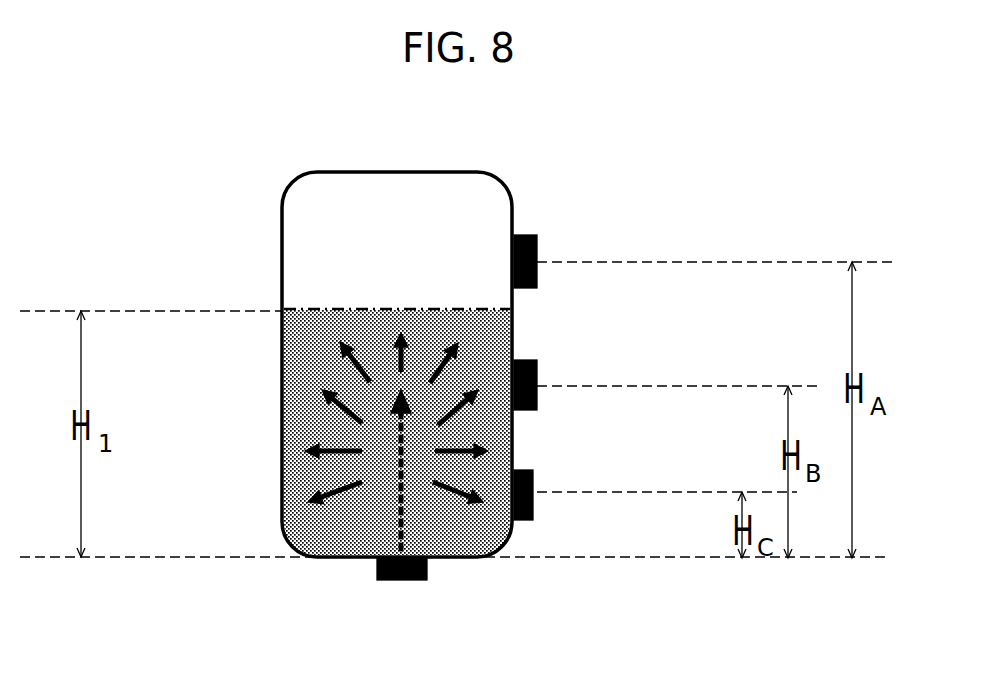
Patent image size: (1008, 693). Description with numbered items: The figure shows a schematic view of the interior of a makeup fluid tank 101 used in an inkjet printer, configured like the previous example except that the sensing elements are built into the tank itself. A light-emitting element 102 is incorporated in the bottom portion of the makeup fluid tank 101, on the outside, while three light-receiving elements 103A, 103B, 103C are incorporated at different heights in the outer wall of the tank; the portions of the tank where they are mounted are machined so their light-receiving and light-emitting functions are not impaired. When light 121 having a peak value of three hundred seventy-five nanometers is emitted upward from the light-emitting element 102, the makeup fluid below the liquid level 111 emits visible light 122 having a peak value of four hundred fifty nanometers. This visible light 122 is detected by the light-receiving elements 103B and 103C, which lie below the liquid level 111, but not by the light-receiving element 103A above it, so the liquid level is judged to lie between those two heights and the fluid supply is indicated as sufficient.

The makeup fluid tank 101 is at (300, 186).
The liquid level of makeup fluid 111 is at (332, 310).
The visible light having a peak value of 450 nm 122 is at (345, 448).
The light having a peak value of 375 nm 121 is at (398, 521).
The light-emitting element 102 is at (377, 573).
The light-receiving element 103A is at (522, 236).
The light-receiving element 103B is at (522, 358).
The light-receiving element 103C is at (520, 518).